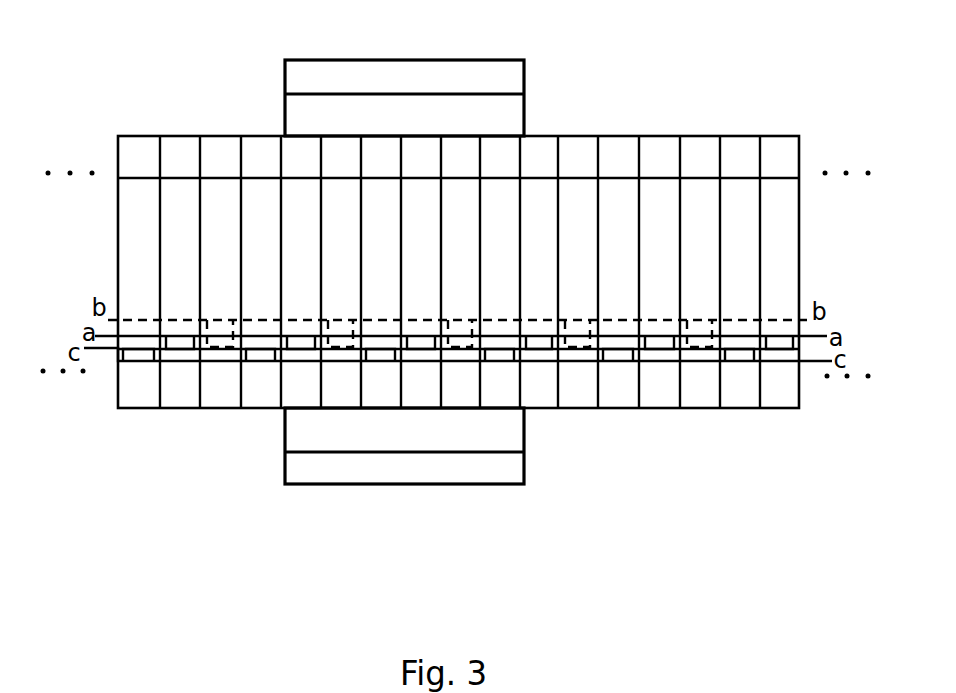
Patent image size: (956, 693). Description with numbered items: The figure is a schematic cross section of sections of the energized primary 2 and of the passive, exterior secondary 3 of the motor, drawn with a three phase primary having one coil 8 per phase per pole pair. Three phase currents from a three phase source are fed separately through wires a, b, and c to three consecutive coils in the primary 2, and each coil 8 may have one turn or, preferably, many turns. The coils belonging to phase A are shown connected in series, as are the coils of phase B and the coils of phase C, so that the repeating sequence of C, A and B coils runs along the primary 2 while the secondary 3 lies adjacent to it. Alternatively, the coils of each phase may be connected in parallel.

The primary 2 is at (129, 135).
The secondary 3 is at (311, 59).
The coil 8 is at (183, 195).